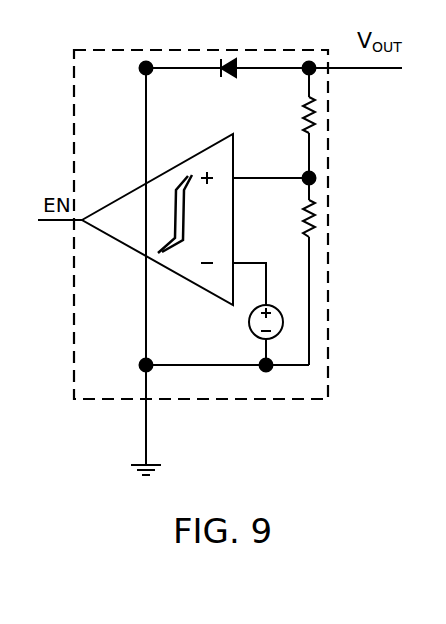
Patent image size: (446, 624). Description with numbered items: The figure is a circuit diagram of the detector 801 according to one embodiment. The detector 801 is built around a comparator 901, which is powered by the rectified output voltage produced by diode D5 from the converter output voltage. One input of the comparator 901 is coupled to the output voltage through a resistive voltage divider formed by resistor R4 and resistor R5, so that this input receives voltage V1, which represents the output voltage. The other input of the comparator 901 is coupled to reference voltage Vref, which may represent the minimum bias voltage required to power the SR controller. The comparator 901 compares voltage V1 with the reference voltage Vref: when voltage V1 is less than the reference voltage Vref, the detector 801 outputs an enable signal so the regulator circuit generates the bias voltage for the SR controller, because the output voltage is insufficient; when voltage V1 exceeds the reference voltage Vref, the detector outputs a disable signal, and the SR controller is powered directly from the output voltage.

The comparator 901 is at (128, 190).
The detector 801 is at (323, 398).
The diode D5 is at (220, 82).
The resistor R4 is at (291, 115).
The resistor R5 is at (291, 218).
The voltage V1 is at (299, 178).
The reference voltage Vref is at (240, 322).